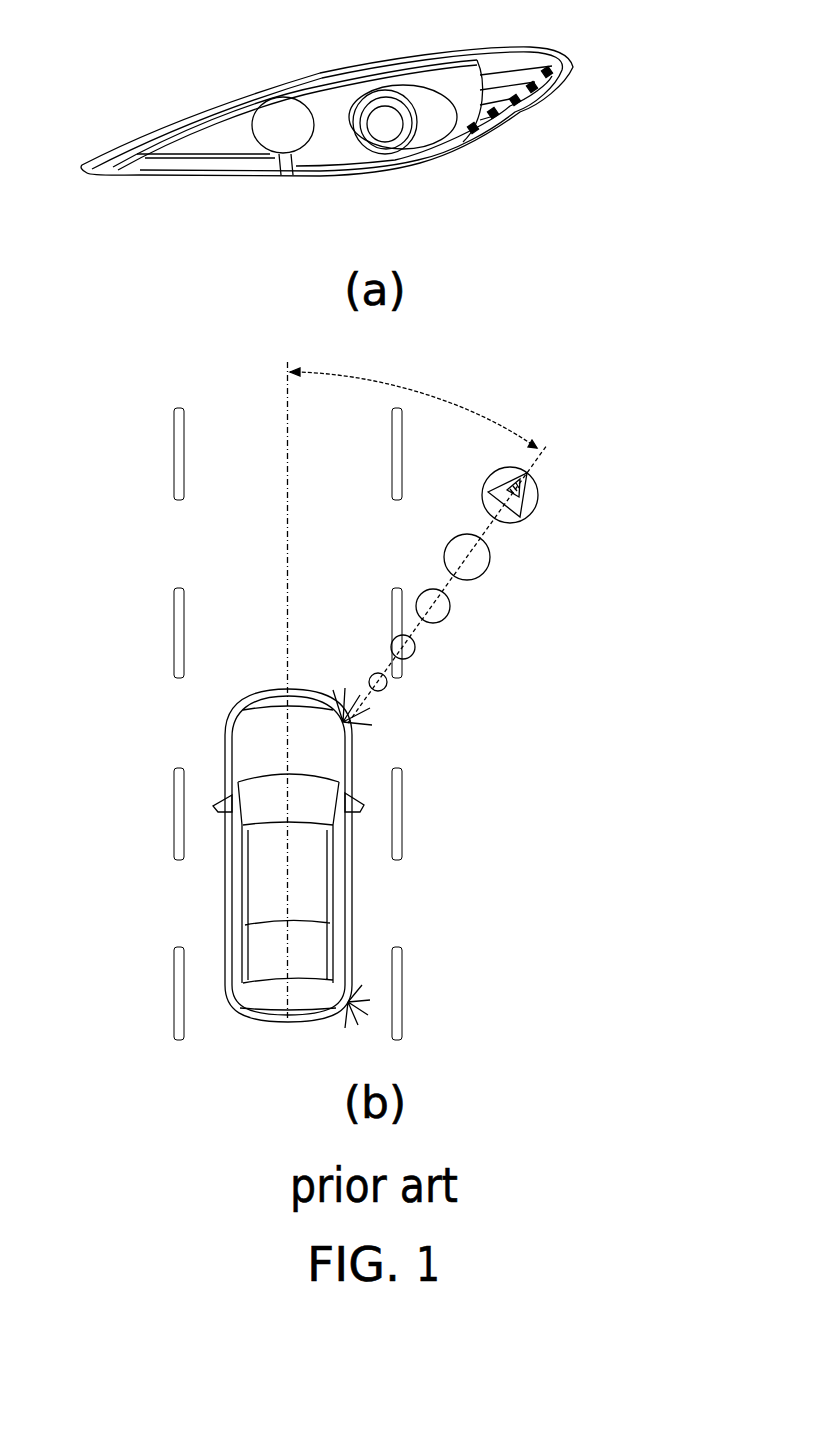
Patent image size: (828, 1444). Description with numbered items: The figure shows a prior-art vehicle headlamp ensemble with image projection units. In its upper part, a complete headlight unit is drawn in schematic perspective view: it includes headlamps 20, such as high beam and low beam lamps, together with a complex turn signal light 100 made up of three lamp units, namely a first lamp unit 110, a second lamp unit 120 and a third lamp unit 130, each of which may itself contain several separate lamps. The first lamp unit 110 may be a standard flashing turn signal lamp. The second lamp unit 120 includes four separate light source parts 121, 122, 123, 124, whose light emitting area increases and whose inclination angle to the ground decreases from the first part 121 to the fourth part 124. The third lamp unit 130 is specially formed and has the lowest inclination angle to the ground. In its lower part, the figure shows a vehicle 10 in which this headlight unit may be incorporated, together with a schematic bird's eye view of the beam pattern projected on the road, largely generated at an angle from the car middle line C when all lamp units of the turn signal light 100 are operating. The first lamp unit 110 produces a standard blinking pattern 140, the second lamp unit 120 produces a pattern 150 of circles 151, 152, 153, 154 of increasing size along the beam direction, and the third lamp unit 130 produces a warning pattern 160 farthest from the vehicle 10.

The headlamps 20 is at (385, 118).
The complex turn signal light 100 is at (507, 205).
The first lamp unit 110 is at (260, 162).
The second lamp unit 120 is at (587, 138).
The light source part 121 is at (478, 133).
The light source part 122 is at (498, 118).
The light source part 123 is at (520, 105).
The light source part 124 is at (537, 92).
The third lamp unit 130 is at (575, 64).
The vehicle 10 is at (350, 885).
The blinking pattern 140 is at (413, 987).
The pattern of circles 150 is at (448, 703).
The circle 151 is at (387, 687).
The circle 152 is at (415, 652).
The circle 153 is at (443, 617).
The circle 154 is at (487, 570).
The warning pattern 160 is at (540, 502).
The car middle line C is at (287, 682).